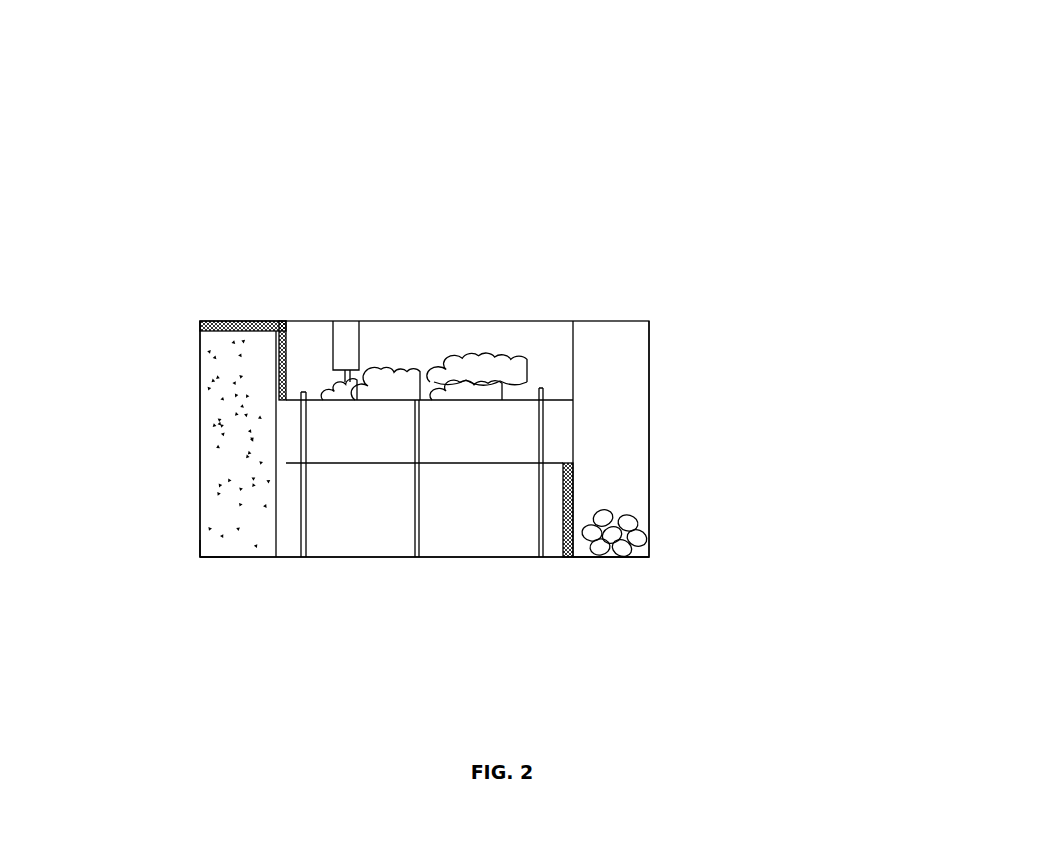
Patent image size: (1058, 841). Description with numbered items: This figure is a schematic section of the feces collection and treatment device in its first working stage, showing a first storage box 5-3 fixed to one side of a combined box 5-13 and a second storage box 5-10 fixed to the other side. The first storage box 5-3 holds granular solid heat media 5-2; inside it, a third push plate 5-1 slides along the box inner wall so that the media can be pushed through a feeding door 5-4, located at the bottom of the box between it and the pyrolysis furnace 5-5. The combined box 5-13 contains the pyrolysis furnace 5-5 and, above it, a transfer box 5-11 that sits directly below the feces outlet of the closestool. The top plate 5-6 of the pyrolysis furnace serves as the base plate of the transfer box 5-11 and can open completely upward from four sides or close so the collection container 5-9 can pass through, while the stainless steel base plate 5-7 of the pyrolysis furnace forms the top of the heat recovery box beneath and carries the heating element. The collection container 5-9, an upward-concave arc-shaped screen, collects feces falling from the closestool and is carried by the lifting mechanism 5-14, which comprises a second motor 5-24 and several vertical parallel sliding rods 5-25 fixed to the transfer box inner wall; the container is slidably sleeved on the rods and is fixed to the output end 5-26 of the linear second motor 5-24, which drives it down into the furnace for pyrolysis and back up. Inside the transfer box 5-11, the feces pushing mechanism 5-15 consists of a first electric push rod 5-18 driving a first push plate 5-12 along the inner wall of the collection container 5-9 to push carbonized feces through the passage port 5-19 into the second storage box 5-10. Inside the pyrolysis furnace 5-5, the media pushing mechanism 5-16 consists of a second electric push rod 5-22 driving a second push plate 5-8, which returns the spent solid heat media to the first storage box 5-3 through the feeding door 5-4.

The third push plate 5-1 is at (218, 333).
The solid heat media 5-2 is at (225, 395).
The first storage box 5-3 is at (217, 558).
The feeding door 5-4 is at (275, 528).
The pyrolysis furnace 5-5 is at (452, 480).
The top plate of the pyrolysis furnace 5-6 is at (480, 463).
The base plate of the pyrolysis furnace 5-7 is at (518, 557).
The second push plate 5-8 is at (573, 528).
The collection container 5-9 is at (565, 397).
The second storage box 5-10 is at (637, 490).
The transfer box 5-11 is at (503, 352).
The first push plate 5-12 is at (283, 322).
The combined box 5-13 is at (859, 127).
The lifting mechanism 5-14 is at (412, 346).
The feces pushing mechanism 5-15 is at (225, 269).
The media pushing mechanism 5-16 is at (760, 350).
The first electric push rod 5-18 is at (275, 350).
The passage port 5-19 is at (572, 362).
The second electric push rod 5-22 is at (573, 508).
The second motor 5-24 is at (340, 343).
The sliding rods 5-25 is at (303, 392).
The output end 5-26 is at (349, 398).